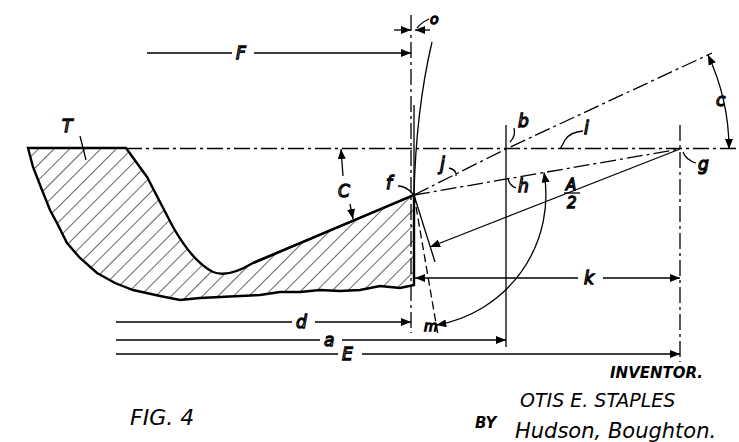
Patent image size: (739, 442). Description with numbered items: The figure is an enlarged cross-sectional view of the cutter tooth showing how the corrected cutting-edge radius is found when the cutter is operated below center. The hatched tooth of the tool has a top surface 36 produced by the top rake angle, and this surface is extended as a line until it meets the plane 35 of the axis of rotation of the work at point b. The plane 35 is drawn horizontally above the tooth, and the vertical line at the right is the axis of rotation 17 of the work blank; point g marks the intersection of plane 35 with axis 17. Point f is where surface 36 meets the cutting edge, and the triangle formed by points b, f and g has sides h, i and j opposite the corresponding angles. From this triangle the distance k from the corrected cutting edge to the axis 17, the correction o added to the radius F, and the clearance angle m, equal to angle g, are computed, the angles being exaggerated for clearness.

The axis of rotation of the work blank 17 is at (680, 214).
The plane of the axis of rotation of the work 35 is at (273, 148).
The surface of the tool produced by the top rake angle 36 is at (300, 250).